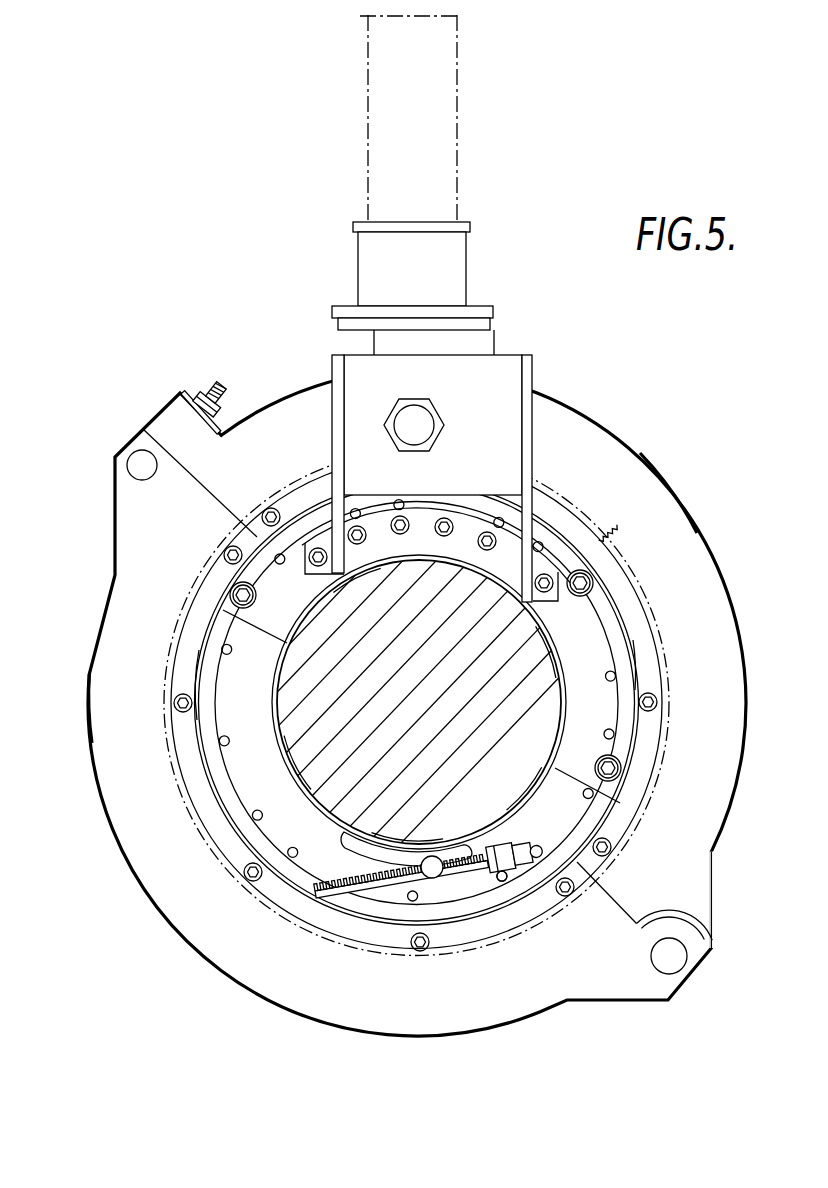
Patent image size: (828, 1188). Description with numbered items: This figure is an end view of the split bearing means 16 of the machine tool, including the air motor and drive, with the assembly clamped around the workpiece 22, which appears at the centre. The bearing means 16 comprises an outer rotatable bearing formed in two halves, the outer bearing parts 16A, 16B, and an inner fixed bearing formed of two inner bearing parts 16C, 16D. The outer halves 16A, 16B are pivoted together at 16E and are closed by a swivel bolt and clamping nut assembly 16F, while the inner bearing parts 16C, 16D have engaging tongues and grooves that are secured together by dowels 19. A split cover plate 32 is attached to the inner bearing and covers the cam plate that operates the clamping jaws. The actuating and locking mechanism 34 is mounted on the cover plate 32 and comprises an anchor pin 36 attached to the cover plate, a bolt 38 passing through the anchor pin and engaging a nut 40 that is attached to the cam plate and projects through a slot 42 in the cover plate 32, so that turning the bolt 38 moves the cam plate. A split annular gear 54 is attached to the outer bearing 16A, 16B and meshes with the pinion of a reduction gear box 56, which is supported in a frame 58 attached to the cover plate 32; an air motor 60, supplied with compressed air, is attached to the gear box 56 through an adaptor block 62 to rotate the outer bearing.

The split bearing means 16 is at (652, 440).
The outer bearing part 16A is at (110, 743).
The outer bearing part 16B is at (678, 510).
The inner bearing part 16C is at (612, 617).
The inner bearing part 16D is at (207, 678).
The pivot 16E is at (675, 960).
The swivel bolt and clamping nut assembly 16F is at (186, 374).
The dowels 19 is at (236, 597).
The workpiece 22 is at (488, 746).
The split cover plate 32 is at (260, 768).
The actuating and locking mechanism 34 is at (483, 884).
The anchor pin 36 is at (510, 865).
The bolt 38 is at (362, 902).
The nut 40 is at (434, 878).
The slot 42 is at (313, 863).
The split annular gear 54 is at (612, 542).
The reduction gear box 56 is at (495, 390).
The frame 58 is at (534, 362).
The air motor 60 is at (452, 140).
The adaptor block 62 is at (454, 250).